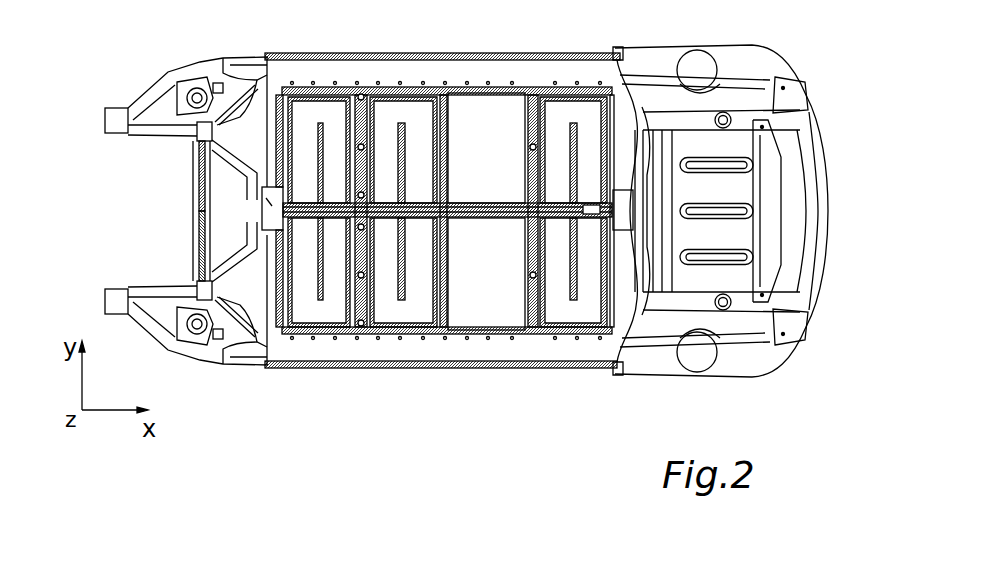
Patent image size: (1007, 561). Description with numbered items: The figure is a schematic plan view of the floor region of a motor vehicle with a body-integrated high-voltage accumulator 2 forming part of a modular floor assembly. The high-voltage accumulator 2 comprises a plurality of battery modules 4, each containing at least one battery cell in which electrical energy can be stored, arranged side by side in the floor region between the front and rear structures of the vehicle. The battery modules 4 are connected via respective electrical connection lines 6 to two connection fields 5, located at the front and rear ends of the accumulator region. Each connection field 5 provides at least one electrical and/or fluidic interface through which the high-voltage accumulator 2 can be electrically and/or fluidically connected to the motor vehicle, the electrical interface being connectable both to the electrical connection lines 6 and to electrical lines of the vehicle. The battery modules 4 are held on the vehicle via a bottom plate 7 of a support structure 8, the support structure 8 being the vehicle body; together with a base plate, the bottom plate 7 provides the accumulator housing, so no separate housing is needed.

The high-voltage accumulator 2 is at (545, 386).
The battery modules 4 is at (558, 108).
The connection fields 5 is at (272, 213).
The electrical connection lines 6 is at (495, 207).
The bottom plate 7 is at (457, 300).
The support structure 8 is at (573, 348).